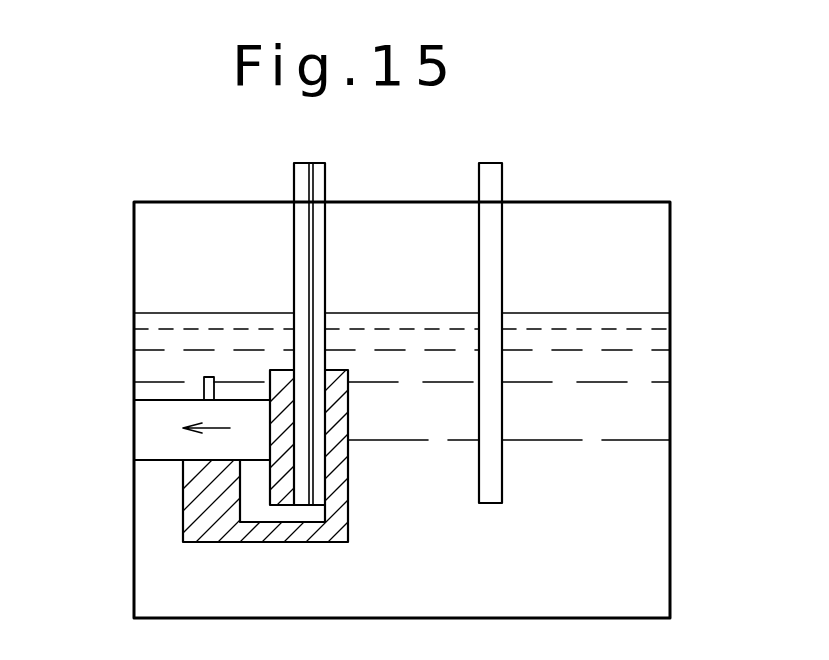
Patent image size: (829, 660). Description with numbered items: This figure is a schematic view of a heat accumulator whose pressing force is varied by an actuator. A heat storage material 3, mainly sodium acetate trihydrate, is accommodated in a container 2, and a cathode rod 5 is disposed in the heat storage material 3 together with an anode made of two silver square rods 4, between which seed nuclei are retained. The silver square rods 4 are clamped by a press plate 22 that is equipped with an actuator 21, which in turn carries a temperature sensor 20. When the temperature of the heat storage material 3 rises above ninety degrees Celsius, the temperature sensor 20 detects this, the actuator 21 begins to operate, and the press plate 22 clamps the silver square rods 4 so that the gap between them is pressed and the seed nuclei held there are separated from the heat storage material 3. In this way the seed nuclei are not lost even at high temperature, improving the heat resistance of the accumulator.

The container 2 is at (670, 512).
The heat storage material 3 is at (658, 365).
The silver square rods 4 is at (325, 182).
The cathode rod 5 is at (502, 182).
The temperature sensor 20 is at (200, 380).
The actuator 21 is at (153, 438).
The press plate 22 is at (207, 543).